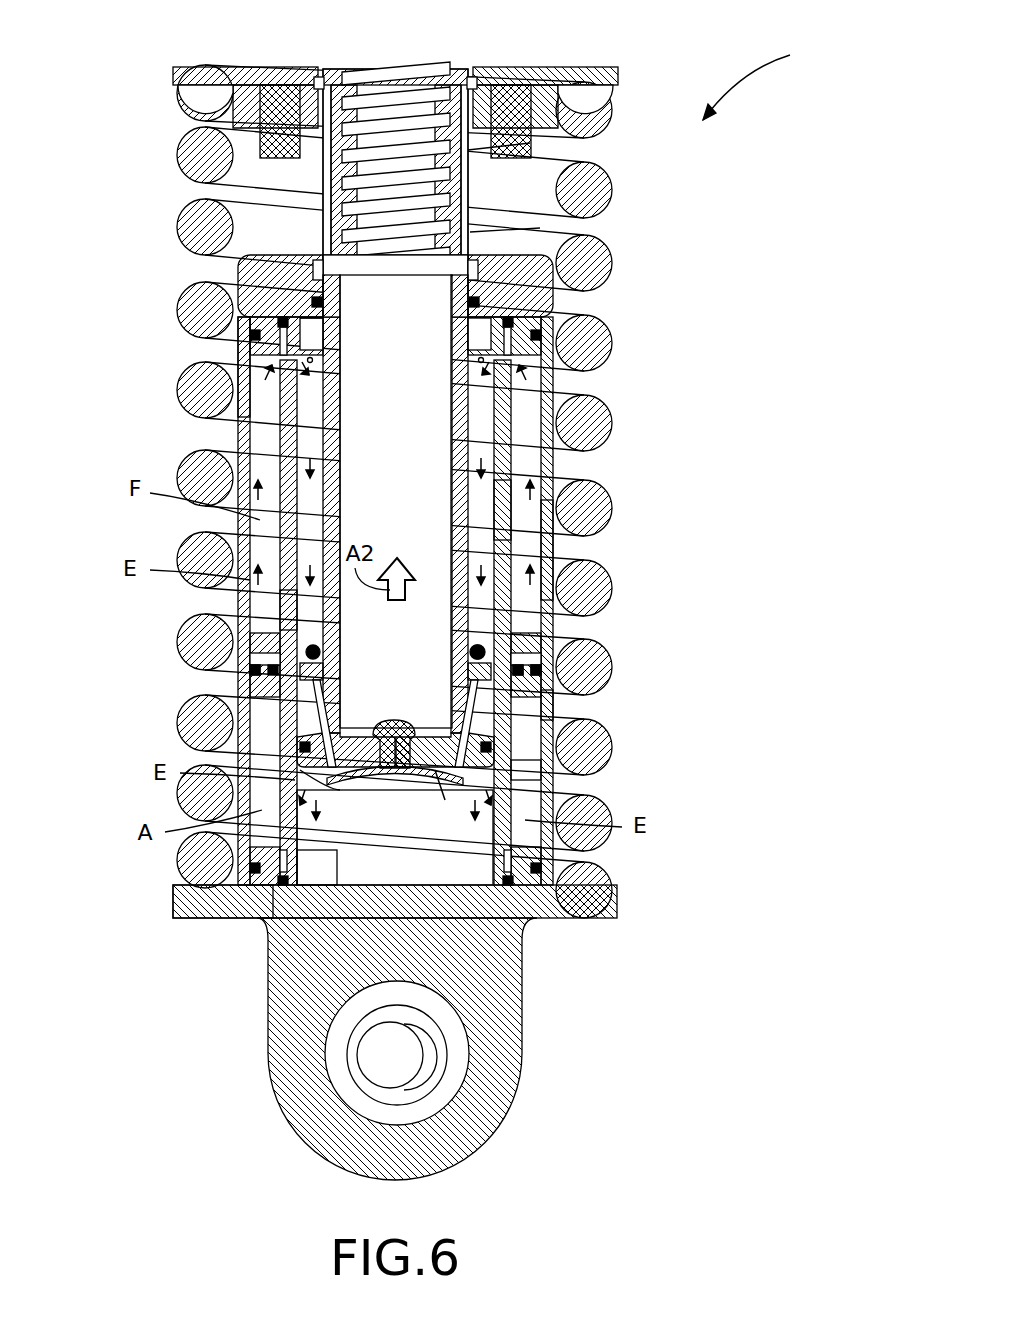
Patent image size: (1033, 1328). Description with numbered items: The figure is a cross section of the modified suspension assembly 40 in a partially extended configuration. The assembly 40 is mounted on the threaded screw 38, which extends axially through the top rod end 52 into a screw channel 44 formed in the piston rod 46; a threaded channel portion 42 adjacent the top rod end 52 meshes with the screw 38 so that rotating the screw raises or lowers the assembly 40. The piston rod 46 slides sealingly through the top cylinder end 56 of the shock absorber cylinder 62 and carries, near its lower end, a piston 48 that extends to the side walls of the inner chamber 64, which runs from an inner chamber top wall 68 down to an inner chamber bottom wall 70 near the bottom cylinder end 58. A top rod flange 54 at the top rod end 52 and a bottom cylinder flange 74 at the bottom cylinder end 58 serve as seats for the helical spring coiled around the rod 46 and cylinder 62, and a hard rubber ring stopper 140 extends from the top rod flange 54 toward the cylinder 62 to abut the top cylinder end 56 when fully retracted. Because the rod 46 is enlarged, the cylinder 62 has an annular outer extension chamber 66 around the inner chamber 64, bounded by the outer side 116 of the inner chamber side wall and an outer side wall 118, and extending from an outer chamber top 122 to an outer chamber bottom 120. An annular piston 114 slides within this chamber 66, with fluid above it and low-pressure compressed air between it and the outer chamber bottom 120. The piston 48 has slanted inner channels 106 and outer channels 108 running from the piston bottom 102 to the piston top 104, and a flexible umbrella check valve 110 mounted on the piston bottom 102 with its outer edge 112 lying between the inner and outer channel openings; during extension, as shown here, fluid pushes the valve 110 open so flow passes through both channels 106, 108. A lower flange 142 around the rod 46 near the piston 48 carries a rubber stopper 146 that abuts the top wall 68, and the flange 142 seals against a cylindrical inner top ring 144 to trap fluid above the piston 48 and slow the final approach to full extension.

The suspension assembly 40 is at (761, 80).
The threaded channel portion 42 is at (366, 75).
The threaded screw 38 is at (415, 78).
The top rod end 52 is at (505, 72).
The top rod flange 54 is at (196, 102).
The top flange rubber ring stopper 140 is at (530, 143).
The top cylinder end 56 is at (540, 228).
The screw channel 44 is at (245, 272).
The cylindrical inner top ring 144 is at (338, 325).
The outer chamber top 122 is at (250, 378).
The outer extension chamber 66 is at (255, 448).
The piston rod 46 is at (541, 548).
The shock absorber cylinder 62 is at (556, 705).
The inner chamber 64 is at (480, 425).
The outer side wall 118 is at (494, 520).
The outer side of inner chamber side wall 116 is at (280, 610).
The inner chamber top wall 68 is at (470, 346).
The inner channels 106 is at (342, 752).
The outer channels 108 is at (326, 712).
The rubber type stopper 146 is at (475, 640).
The flexible check valve 110 is at (368, 780).
The inner chamber bottom wall 70 is at (378, 878).
The outer valve edge 112 is at (321, 867).
The annular piston 114 is at (265, 640).
The lower flange 142 is at (262, 670).
The piston top 104 is at (535, 670).
The piston bottom 102 is at (545, 783).
The outer chamber bottom 120 is at (255, 846).
The bottom cylinder flange 74 is at (618, 905).
The bottom cylinder end 58 is at (225, 920).
The piston 48 is at (490, 900).